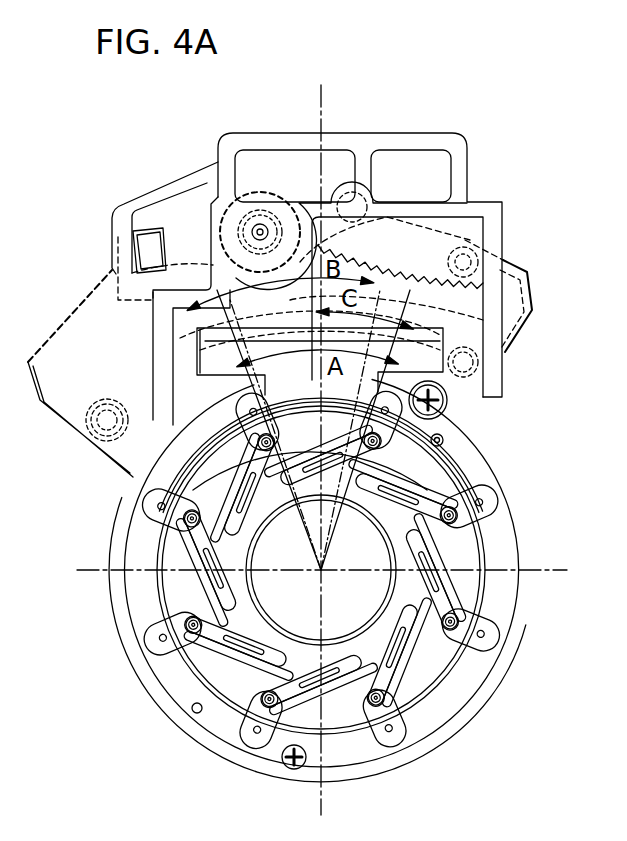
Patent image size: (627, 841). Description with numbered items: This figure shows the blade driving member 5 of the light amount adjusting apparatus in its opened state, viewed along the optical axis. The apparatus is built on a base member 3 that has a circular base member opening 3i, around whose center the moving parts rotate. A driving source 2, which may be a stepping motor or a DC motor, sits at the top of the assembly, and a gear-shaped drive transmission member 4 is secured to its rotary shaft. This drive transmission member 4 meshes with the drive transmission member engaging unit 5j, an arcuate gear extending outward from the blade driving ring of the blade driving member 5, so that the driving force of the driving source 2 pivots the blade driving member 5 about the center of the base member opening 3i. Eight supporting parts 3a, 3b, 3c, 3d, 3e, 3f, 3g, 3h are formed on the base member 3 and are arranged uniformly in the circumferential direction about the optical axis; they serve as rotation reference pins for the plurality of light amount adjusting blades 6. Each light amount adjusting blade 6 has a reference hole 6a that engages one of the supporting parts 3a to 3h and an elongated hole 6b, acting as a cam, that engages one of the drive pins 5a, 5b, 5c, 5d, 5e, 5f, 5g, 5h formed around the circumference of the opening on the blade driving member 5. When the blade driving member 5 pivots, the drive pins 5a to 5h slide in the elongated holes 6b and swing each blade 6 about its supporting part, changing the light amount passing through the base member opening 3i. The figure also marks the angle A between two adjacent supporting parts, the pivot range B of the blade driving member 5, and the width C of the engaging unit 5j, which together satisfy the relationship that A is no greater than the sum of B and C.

The driving source 2 is at (278, 190).
The base member 3 is at (118, 208).
The supporting part 3a is at (250, 409).
The supporting part 3b is at (392, 407).
The supporting part 3c is at (482, 502).
The supporting part 3d is at (484, 637).
The supporting part 3e is at (392, 730).
The supporting part 3f is at (254, 733).
The supporting part 3g is at (160, 639).
The supporting part 3h is at (158, 505).
The base member opening 3i is at (430, 578).
The drive transmission member 4 is at (252, 410).
The blade driving member 5 is at (193, 334).
The drive pin 5a is at (260, 440).
The drive pin 5b is at (444, 440).
The drive pin 5c is at (452, 513).
The drive pin 5d is at (454, 618).
The drive pin 5e is at (382, 698).
The drive pin 5f is at (268, 700).
The drive pin 5g is at (188, 627).
The drive pin 5h is at (165, 522).
The drive transmission member engaging unit 5j is at (470, 328).
The light amount adjusting blade 6 is at (215, 502).
The reference hole 6a is at (185, 518).
The elongated hole 6b is at (213, 583).